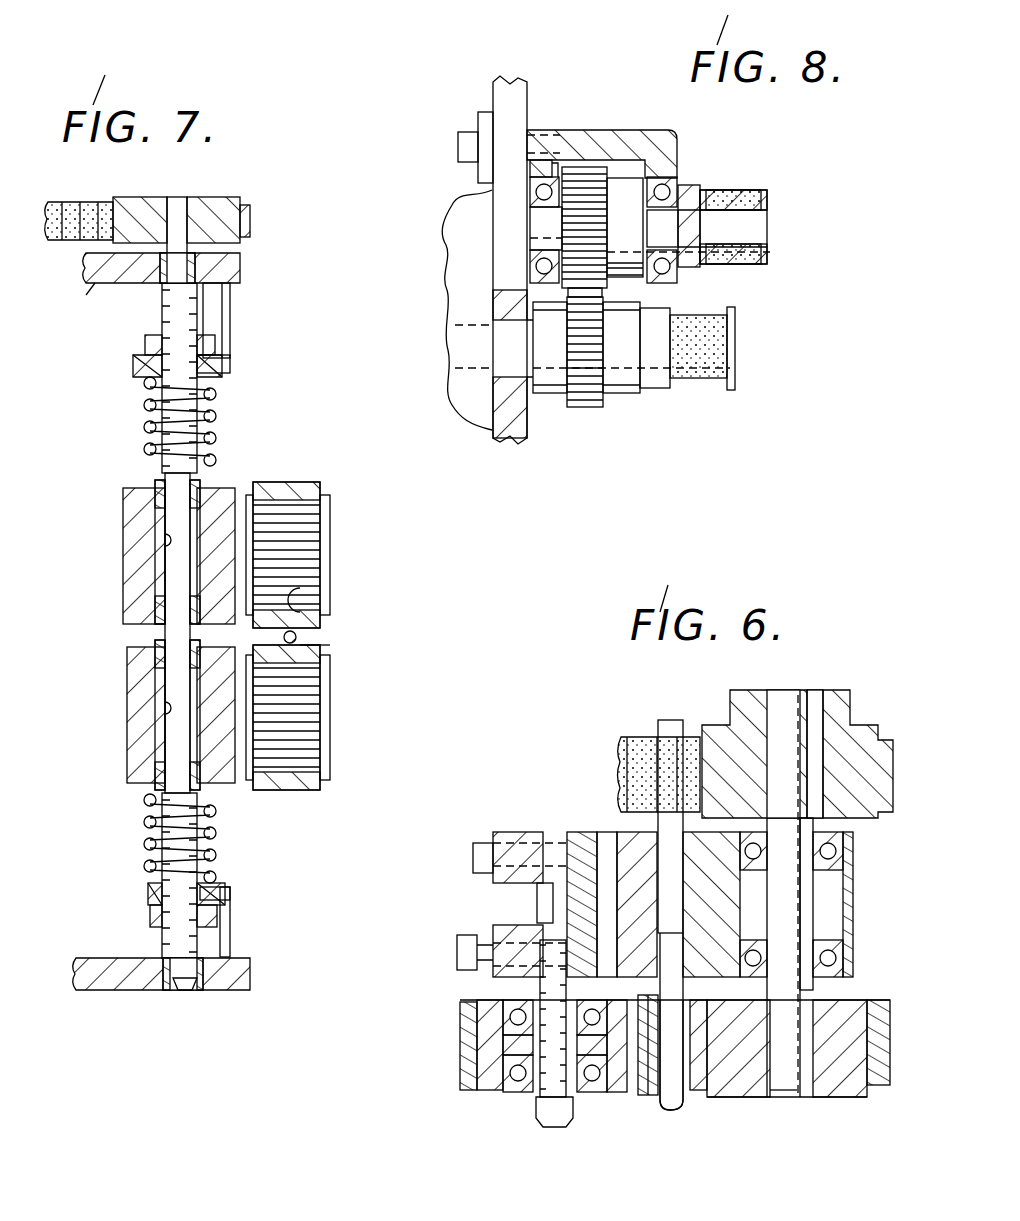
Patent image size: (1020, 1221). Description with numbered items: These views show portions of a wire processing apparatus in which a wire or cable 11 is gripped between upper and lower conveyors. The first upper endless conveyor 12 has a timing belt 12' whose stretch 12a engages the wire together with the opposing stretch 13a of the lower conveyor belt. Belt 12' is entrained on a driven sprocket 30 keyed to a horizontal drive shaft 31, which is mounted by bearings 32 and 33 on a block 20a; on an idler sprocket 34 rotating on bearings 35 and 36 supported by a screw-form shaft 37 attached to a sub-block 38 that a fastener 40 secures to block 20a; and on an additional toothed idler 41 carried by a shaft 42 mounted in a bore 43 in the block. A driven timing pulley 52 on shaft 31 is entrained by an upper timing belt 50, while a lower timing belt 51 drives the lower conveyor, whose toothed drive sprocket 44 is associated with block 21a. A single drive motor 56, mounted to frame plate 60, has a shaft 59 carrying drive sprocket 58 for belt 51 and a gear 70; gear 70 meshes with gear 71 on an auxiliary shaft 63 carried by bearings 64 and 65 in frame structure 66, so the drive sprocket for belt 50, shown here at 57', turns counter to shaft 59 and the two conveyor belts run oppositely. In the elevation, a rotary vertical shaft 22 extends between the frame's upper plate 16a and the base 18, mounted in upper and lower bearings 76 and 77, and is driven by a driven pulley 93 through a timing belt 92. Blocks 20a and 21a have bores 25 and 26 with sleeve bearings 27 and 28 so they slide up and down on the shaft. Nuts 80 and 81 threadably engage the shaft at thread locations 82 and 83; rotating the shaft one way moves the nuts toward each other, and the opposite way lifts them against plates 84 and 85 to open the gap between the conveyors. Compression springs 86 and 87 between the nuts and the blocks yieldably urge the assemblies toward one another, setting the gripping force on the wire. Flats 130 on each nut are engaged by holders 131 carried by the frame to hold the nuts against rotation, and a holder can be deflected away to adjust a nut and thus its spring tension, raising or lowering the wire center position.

In FIG. 7, the driven pulley 93 is at (225, 200).
In FIG. 7, the timing belt 92 is at (251, 218).
In FIG. 7, the upper plate 16a is at (243, 268).
In FIG. 7, the upper bearing 76 is at (88, 293).
In FIG. 7, the rotary vertical shaft 22 is at (198, 462).
In FIG. 7, the holder 131 is at (232, 312).
In FIG. 7, the flat 130 is at (232, 366).
In FIG. 7, the plate 84 is at (147, 340).
In FIG. 7, the nut 80 is at (128, 355).
In FIG. 7, the thread location 82 is at (140, 372).
In FIG. 7, the compression spring 86 is at (145, 440).
In FIG. 7, the block 20a is at (122, 572).
In FIG. 6, the block 20a is at (735, 880).
In FIG. 7, the sleeve bearing 27 is at (124, 502).
In FIG. 7, the bore 25 is at (160, 540).
In FIG. 7, the driven sprocket 30 is at (300, 523).
In FIG. 6, the driven sprocket 30 is at (860, 1050).
In FIG. 7, the belt stretch 12a is at (310, 595).
In FIG. 7, the wire or cable 11 is at (298, 636).
In FIG. 7, the belt stretch 13a is at (330, 645).
In FIG. 7, the toothed drive sprocket 44 is at (300, 700).
In FIG. 7, the block 21a is at (128, 738).
In FIG. 7, the sleeve bearing 28 is at (130, 656).
In FIG. 7, the bore 26 is at (128, 714).
In FIG. 7, the compression spring 87 is at (216, 822).
In FIG. 7, the thread location 83 is at (148, 896).
In FIG. 7, the nut 81 is at (145, 906).
In FIG. 7, the plate 85 is at (219, 912).
In FIG. 7, the base 18 is at (253, 970).
In FIG. 7, the lower bearing 77 is at (160, 975).
In FIG. 8, the frame plate 60 is at (512, 432).
In FIG. 8, the drive motor 56 is at (451, 292).
In FIG. 8, the shaft 59 is at (515, 345).
In FIG. 8, the frame structure 66 is at (655, 130).
In FIG. 8, the bearing 64 is at (540, 175).
In FIG. 8, the bearing 65 is at (678, 166).
In FIG. 8, the gear 71 is at (586, 167).
In FIG. 8, the upper timing belt 50 is at (745, 187).
In FIG. 6, the upper timing belt 50 is at (628, 737).
In FIG. 8, the auxiliary shaft 63 is at (750, 224).
In FIG. 8, the shaft 57' is at (727, 248).
In FIG. 8, the gear 70 is at (590, 408).
In FIG. 8, the lower timing belt 51 is at (730, 340).
In FIG. 8, the drive sprocket 58 is at (738, 365).
In FIG. 6, the driven timing pulley 52 is at (860, 740).
In FIG. 6, the bore 43 is at (668, 813).
In FIG. 6, the drive shaft 31 is at (805, 916).
In FIG. 6, the bearing 32 is at (846, 846).
In FIG. 6, the bearing 33 is at (846, 962).
In FIG. 6, the idler sprocket 34 is at (505, 832).
In FIG. 6, the sub-block 38 is at (538, 905).
In FIG. 6, the fastener 40 is at (457, 953).
In FIG. 6, the conveyor belt 12' is at (426, 1046).
In FIG. 6, the first upper endless conveyor 12 is at (616, 1067).
In FIG. 6, the bearing 35 is at (482, 1006).
In FIG. 6, the bearing 36 is at (510, 1095).
In FIG. 6, the shaft 37 is at (553, 1082).
In FIG. 6, the shaft 42 is at (670, 1108).
In FIG. 6, the toothed idler 41 is at (736, 1040).